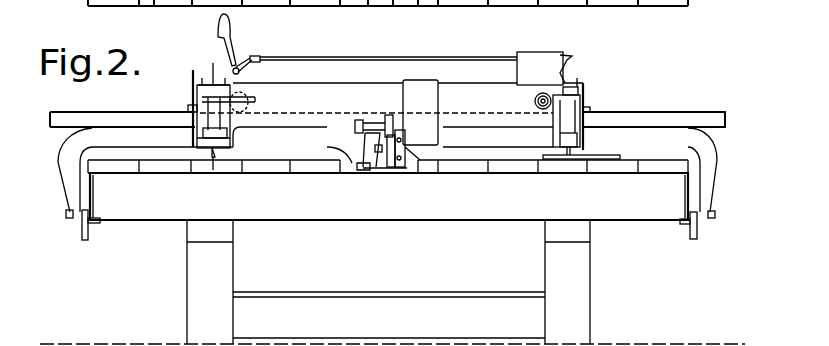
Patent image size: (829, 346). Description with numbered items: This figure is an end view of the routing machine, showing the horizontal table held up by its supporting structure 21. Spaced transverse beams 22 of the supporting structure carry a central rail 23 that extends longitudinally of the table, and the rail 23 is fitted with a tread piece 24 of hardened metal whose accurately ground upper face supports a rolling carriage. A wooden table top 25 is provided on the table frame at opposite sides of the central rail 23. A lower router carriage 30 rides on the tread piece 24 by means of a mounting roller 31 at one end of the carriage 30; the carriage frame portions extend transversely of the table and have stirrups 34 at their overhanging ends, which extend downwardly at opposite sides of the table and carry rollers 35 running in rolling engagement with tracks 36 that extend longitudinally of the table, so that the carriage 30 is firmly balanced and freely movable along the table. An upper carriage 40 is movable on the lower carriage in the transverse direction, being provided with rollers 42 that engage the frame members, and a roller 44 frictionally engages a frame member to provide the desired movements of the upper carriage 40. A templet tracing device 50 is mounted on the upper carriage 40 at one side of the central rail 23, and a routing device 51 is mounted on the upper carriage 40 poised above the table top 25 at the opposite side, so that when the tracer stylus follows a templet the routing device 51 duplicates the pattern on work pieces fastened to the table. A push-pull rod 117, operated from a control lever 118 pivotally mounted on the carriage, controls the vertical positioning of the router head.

The supporting structure 21 is at (182, 293).
The transverse beams 22 is at (390, 221).
The central rail 23 is at (370, 6).
The tread piece 24 is at (398, 6).
The wooden table top 25 is at (214, 160).
The lower router carriage 30 is at (127, 135).
The mounting roller 31 is at (390, 116).
The stirrups 34 is at (70, 201).
The rollers 35 is at (81, 220).
The tracks 36 is at (82, 236).
The upper carriage 40 is at (513, 100).
The rollers 42 is at (243, 103).
The roller 44 is at (534, 100).
The templet tracing device 50 is at (195, 109).
The routing device 51 is at (582, 108).
The push-pull rod 117 is at (307, 57).
The control lever 118 is at (233, 43).